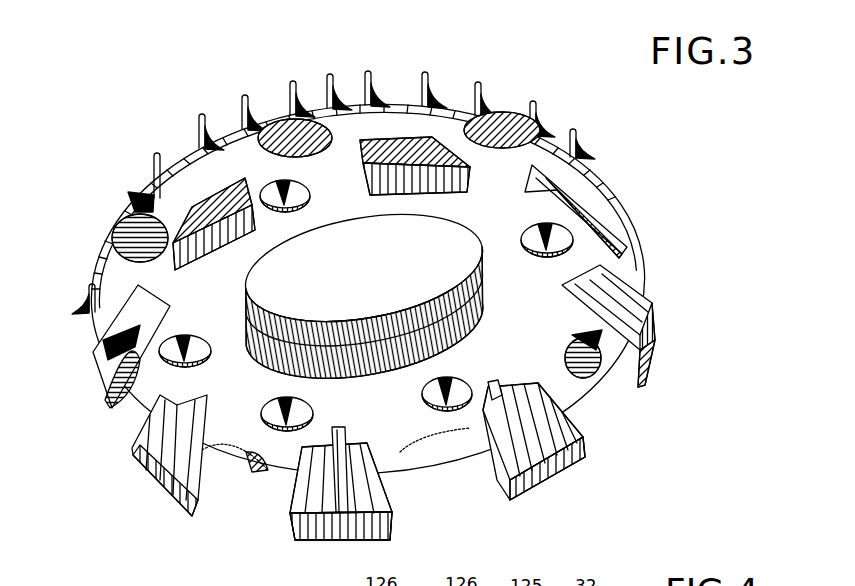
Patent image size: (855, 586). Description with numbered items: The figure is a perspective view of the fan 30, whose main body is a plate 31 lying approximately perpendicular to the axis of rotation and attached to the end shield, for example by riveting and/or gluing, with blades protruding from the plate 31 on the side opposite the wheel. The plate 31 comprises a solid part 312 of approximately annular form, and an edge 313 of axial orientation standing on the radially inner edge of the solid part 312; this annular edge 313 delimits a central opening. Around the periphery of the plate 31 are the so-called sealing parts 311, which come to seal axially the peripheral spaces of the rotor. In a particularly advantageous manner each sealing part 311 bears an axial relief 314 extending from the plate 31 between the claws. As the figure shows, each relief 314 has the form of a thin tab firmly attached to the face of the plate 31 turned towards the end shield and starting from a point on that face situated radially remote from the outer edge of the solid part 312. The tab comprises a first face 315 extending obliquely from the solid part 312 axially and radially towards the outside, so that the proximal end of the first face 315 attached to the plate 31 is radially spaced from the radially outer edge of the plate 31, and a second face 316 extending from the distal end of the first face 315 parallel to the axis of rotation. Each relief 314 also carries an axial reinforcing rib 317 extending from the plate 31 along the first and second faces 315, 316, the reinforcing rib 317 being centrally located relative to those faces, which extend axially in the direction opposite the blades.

The fan 30 is at (656, 186).
The plate 31 is at (150, 200).
The sealing parts 311 is at (137, 412).
The solid part 312 is at (232, 262).
The edge 313 is at (380, 325).
The axial relief 314 is at (662, 337).
The first face 315 is at (312, 483).
The second face 316 is at (317, 530).
The axial reinforcing rib 317 is at (340, 443).